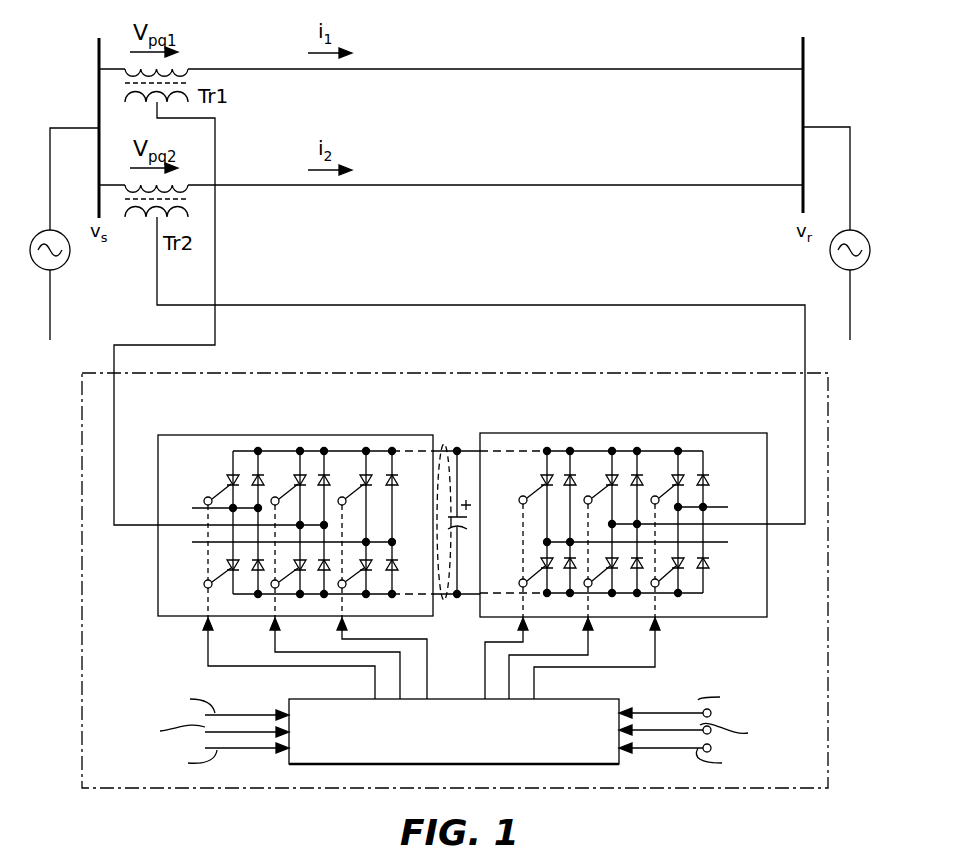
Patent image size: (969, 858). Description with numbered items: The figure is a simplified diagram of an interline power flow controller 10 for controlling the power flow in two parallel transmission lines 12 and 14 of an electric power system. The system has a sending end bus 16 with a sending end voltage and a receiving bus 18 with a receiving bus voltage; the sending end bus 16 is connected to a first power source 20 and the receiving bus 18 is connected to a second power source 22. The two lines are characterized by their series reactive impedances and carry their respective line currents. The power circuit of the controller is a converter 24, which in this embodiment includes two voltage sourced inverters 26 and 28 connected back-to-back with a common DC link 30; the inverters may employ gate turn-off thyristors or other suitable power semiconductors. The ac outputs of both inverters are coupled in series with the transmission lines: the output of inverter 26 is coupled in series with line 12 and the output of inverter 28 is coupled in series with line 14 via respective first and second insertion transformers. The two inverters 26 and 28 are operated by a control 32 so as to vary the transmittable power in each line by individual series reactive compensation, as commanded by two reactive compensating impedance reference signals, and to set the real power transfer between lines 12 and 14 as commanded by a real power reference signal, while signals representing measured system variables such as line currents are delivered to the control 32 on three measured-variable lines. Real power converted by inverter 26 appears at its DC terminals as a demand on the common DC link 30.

The interline power flow controller 10 is at (483, 253).
The first transmission line 12 is at (525, 70).
The second transmission line 14 is at (537, 186).
The sending end bus 16 is at (97, 97).
The receiving bus 18 is at (805, 94).
The first power source 20 is at (66, 264).
The second power source 22 is at (830, 249).
The converter 24 is at (828, 684).
The first voltage sourced inverter 26 is at (296, 435).
The second voltage sourced inverter 28 is at (575, 433).
The common DC link 30 is at (441, 445).
The control 32 is at (316, 699).